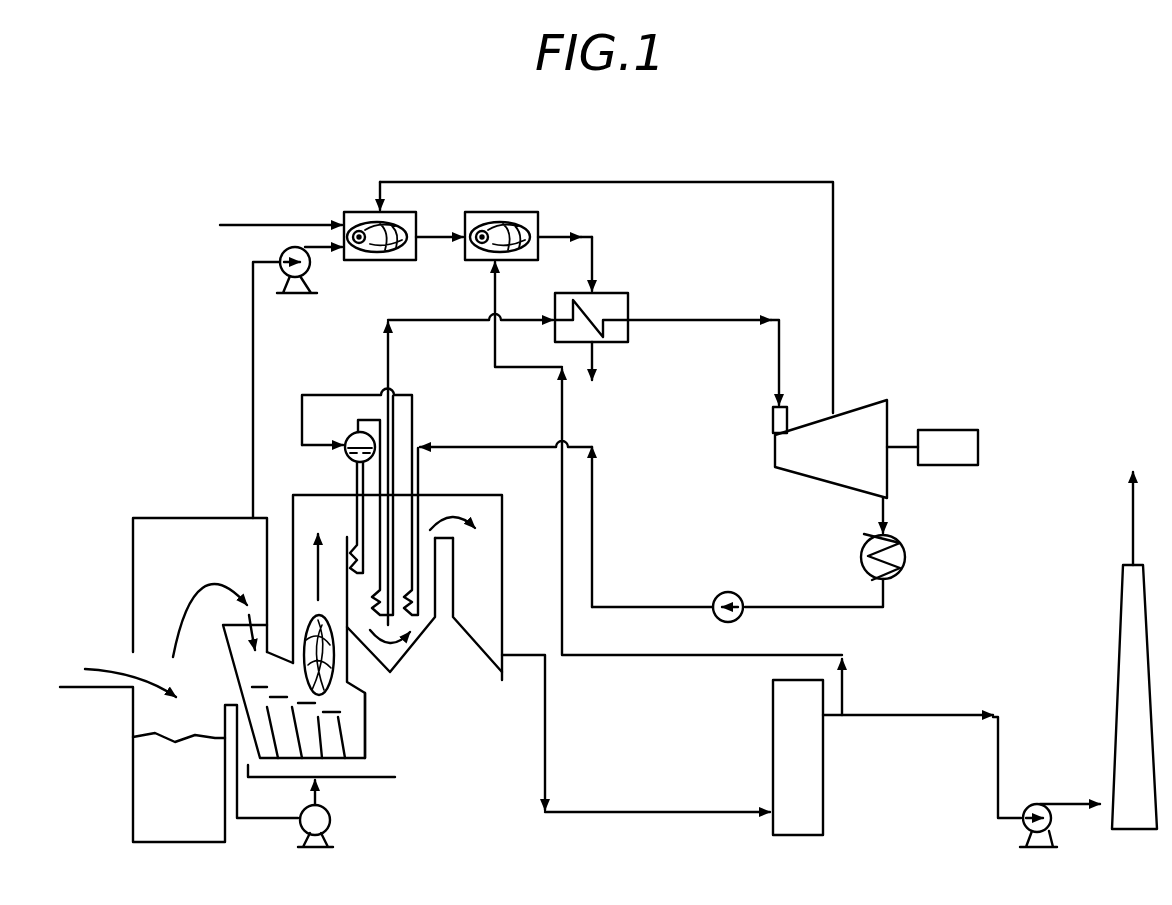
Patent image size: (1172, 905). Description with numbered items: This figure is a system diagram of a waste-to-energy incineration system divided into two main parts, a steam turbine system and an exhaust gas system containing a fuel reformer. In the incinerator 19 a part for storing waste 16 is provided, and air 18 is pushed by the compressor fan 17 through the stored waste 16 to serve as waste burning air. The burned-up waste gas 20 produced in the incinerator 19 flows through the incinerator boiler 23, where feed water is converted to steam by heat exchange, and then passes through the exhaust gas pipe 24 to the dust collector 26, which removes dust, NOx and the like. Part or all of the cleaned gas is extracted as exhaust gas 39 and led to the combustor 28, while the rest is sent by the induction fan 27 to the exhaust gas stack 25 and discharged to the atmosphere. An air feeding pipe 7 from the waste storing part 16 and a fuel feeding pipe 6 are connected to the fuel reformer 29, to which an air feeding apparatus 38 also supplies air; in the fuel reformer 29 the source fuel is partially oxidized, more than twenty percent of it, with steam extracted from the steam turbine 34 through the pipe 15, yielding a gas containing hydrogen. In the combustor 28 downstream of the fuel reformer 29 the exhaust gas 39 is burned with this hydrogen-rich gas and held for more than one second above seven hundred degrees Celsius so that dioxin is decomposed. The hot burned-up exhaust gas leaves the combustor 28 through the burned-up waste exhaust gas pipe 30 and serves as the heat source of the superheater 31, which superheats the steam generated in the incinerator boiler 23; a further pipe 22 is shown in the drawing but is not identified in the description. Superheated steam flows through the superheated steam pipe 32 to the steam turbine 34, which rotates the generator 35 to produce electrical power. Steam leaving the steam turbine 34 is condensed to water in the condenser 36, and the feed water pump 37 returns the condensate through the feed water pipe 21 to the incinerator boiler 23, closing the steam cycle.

The fuel feeding pipe 6 is at (298, 226).
The air feeding pipe 7 is at (250, 364).
The pipe 15 is at (833, 280).
The waste 16 is at (100, 668).
The compressor fan 17 is at (333, 822).
The air 18 is at (318, 783).
The incinerator 19 is at (355, 720).
The burned-up waste gas 20 is at (310, 524).
The feed water pipe 21 is at (594, 545).
The steam line 22 is at (423, 320).
The incinerator boiler 23 is at (357, 480).
The exhaust gas pipe 24 is at (672, 812).
The exhaust gas stack 25 is at (1125, 680).
The dust collector 26 is at (823, 818).
The induction fan 27 is at (1047, 822).
The combustor 28 is at (512, 211).
The fuel reformer 29 is at (350, 211).
The burned-up waste exhaust gas pipe 30 is at (554, 237).
The superheater 31 is at (617, 293).
The superheated steam pipe 32 is at (693, 318).
The steam turbine 34 is at (850, 417).
The generator 35 is at (947, 437).
The condenser 36 is at (905, 550).
The feed water pump 37 is at (728, 592).
The air feeding apparatus 38 is at (308, 264).
The exhaust gas 39 is at (561, 423).